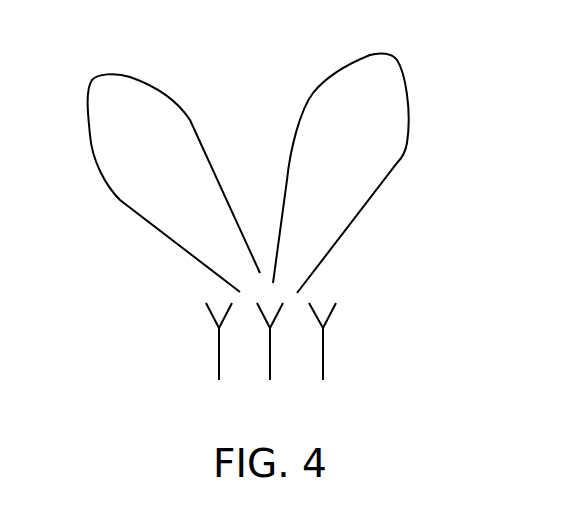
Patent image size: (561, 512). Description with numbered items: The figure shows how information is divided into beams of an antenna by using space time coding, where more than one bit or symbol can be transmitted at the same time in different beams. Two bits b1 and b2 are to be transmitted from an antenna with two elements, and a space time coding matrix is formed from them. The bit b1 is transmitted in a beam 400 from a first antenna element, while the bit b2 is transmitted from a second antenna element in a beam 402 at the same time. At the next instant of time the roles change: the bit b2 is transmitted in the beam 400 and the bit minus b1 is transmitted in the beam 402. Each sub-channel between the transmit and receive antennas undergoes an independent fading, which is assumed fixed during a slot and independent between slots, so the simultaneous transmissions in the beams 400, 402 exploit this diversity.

The beam 400 is at (128, 82).
The beam 402 is at (375, 159).
The bit b1 is at (346, 130).
The bit b2 is at (346, 167).